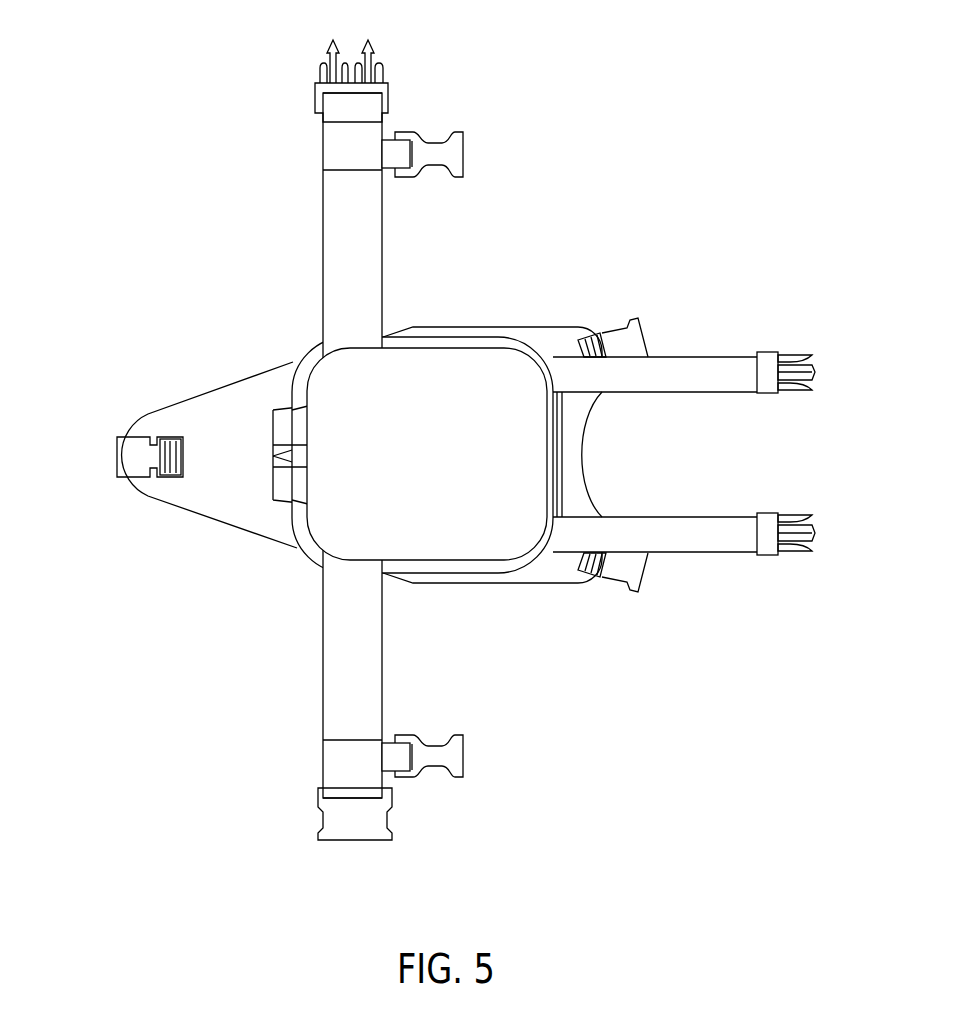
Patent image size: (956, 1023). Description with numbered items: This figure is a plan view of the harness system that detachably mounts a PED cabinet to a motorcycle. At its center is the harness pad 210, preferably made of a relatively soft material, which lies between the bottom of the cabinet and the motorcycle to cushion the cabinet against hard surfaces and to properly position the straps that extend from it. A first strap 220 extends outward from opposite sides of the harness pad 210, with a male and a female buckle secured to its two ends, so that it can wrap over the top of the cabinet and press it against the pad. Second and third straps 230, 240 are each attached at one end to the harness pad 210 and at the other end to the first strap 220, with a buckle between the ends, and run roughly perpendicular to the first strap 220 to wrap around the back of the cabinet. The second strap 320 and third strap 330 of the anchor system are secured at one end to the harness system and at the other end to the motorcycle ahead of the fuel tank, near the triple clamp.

The harness pad 210 is at (193, 520).
The first strap 220 is at (323, 197).
The second strap 230 is at (700, 357).
The third strap 240 is at (700, 517).
The second strap 320 is at (565, 348).
The third strap 330 is at (565, 560).